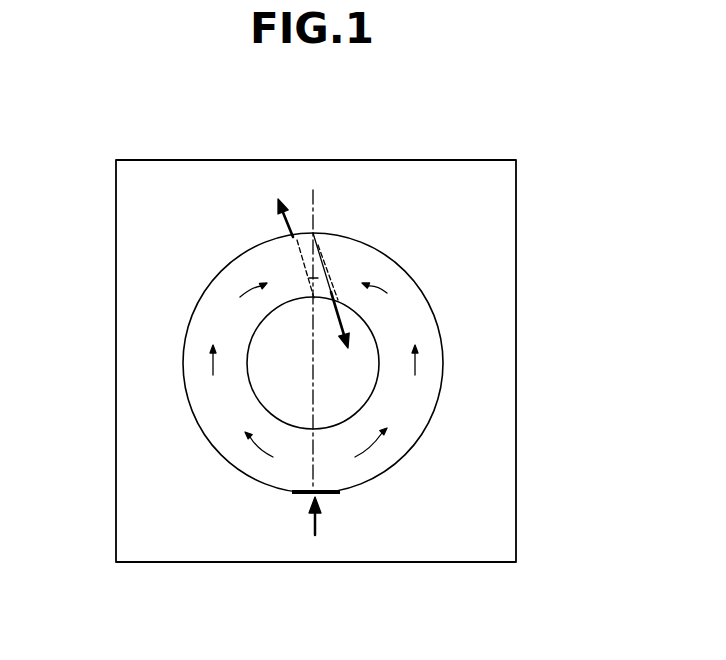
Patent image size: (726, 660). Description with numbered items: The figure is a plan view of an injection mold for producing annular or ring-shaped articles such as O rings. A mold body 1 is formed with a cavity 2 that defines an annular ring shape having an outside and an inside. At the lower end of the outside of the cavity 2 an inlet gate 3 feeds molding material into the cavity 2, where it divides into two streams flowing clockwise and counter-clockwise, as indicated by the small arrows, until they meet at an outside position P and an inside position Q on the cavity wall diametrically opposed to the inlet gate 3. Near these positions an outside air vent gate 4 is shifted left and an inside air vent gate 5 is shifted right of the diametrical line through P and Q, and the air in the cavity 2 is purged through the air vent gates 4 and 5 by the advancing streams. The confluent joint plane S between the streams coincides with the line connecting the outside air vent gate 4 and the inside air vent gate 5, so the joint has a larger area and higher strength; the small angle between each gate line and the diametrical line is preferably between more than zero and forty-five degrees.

The mold body 1 is at (338, 398).
The cavity 2 is at (232, 407).
The inlet gate 3 is at (300, 493).
The outside air vent gate 4 is at (293, 243).
The inside air vent gate 5 is at (340, 305).
The outside position P is at (315, 234).
The inside position Q is at (302, 296).
The joint plane S is at (318, 284).